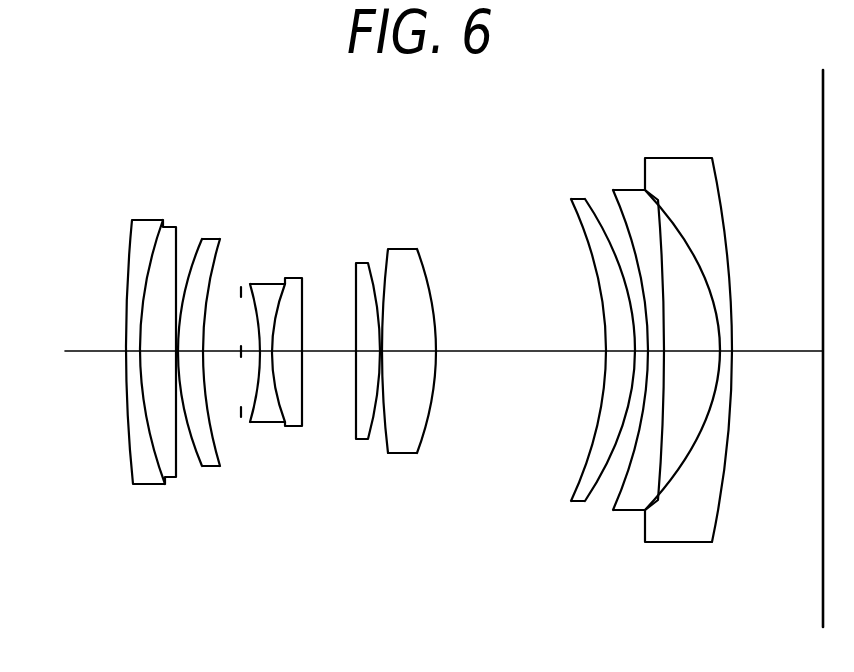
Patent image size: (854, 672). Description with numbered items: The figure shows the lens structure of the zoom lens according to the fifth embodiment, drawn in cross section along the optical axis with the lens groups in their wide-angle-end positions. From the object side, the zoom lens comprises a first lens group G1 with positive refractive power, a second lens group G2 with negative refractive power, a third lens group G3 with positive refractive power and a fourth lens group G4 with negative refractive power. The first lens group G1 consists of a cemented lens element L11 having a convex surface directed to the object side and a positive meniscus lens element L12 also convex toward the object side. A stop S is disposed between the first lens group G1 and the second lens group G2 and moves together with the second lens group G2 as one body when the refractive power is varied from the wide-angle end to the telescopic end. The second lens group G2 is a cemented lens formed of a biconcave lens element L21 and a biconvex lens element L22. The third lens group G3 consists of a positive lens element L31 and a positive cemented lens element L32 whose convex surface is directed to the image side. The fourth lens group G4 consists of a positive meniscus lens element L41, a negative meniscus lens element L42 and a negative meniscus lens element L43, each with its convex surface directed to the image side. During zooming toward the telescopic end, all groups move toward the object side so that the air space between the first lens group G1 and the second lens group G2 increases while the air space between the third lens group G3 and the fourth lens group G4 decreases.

The first lens group G1 is at (221, 215).
The second lens group G2 is at (305, 215).
The third lens group G3 is at (430, 215).
The fourth lens group G4 is at (752, 155).
The stop S is at (240, 283).
The cemented lens element L11 is at (150, 486).
The positive meniscus lens element L12 is at (208, 467).
The biconcave lens element L21 is at (267, 423).
The biconvex lens element L22 is at (295, 427).
The positive lens element L31 is at (362, 440).
The positive cemented lens element L32 is at (403, 454).
The positive meniscus lens element L41 is at (577, 502).
The negative meniscus lens element L42 is at (631, 511).
The negative meniscus lens element L43 is at (682, 543).